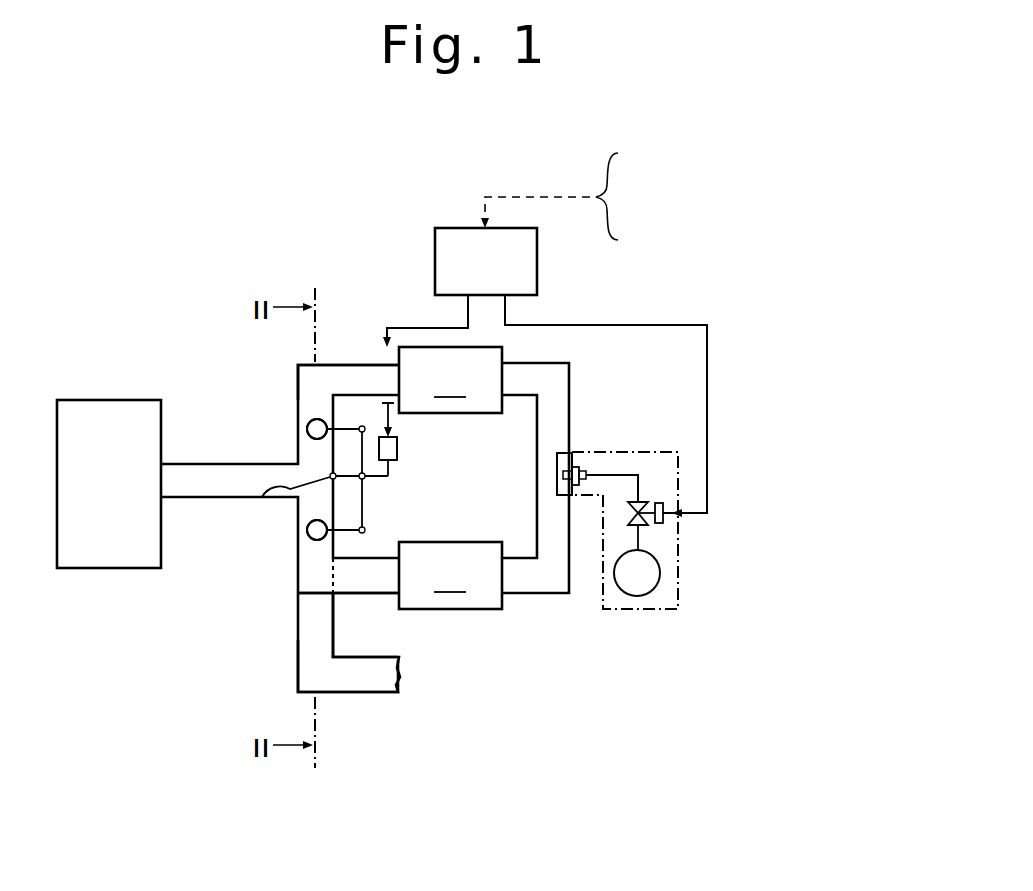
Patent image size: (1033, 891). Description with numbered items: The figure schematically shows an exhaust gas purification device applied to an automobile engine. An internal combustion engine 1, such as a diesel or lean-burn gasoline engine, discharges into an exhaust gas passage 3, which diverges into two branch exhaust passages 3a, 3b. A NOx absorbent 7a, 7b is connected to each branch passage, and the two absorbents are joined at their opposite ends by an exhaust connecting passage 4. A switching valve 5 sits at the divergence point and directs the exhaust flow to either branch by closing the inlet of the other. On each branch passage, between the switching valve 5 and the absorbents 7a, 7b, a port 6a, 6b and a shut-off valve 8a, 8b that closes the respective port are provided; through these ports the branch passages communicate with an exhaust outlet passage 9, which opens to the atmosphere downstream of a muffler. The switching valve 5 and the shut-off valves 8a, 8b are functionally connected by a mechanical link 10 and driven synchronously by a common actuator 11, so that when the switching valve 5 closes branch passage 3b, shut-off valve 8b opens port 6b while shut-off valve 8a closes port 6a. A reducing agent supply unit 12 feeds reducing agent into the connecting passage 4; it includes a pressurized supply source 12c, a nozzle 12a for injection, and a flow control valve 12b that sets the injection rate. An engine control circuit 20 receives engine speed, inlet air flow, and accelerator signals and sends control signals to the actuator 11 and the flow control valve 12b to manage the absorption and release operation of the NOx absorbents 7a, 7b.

The internal combustion engine 1 is at (127, 400).
The exhaust gas passage 3 is at (195, 497).
The branch exhaust passage 3a is at (352, 365).
The branch exhaust passage 3b is at (375, 593).
The exhaust connecting passage 4 is at (569, 372).
The switching valve 5 is at (263, 497).
The port 6a is at (303, 430).
The port 6b is at (303, 532).
The NOx absorbent 7a is at (450, 380).
The NOx absorbent 7b is at (450, 575).
The shut-off valve 8a is at (312, 420).
The shut-off valve 8b is at (313, 541).
The exhaust outlet passage 9 is at (356, 692).
The mechanical link 10 is at (362, 512).
The actuator 11 is at (397, 447).
The reducing agent supply unit 12 is at (618, 610).
The nozzle 12a is at (578, 467).
The flow control valve 12b is at (645, 527).
The supply source 12c is at (660, 573).
The engine control circuit (ECU) 20 is at (537, 258).